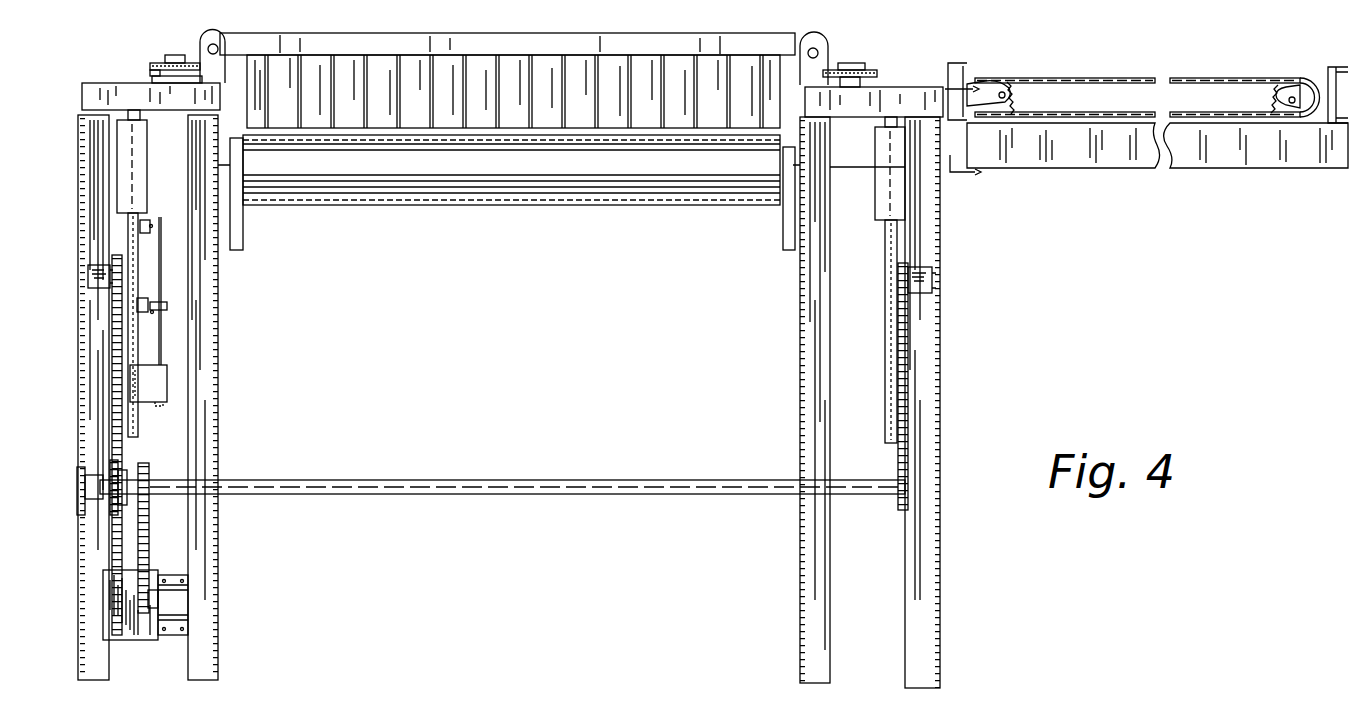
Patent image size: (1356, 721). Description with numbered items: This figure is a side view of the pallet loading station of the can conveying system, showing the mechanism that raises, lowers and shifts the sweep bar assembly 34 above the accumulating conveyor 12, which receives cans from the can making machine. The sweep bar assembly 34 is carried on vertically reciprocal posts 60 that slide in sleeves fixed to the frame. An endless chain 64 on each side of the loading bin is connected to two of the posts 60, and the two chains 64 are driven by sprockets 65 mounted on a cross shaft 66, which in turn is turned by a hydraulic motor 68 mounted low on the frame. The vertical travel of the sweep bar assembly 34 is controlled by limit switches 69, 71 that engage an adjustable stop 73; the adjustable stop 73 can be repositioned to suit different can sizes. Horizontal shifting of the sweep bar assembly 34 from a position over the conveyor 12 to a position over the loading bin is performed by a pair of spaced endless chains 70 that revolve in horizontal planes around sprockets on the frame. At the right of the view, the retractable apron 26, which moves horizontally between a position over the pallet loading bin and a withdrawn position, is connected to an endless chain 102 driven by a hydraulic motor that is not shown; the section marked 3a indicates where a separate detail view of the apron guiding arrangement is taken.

The sweep bar assembly 34 is at (670, 55).
The accumulating conveyor 12 is at (550, 206).
The endless chains 70 is at (164, 62).
The posts 60 is at (133, 232).
The limit switch 71 is at (148, 224).
The endless chain 64 is at (113, 310).
The adjustable stop 73 is at (167, 307).
The limit switch 69 is at (142, 309).
The cross shaft 66 is at (316, 478).
The sprockets 65 is at (103, 506).
The hydraulic motor 68 is at (186, 596).
The section line 3a is at (967, 129).
The endless chain 102 is at (1132, 76).
The retractable apron 26 is at (1030, 115).